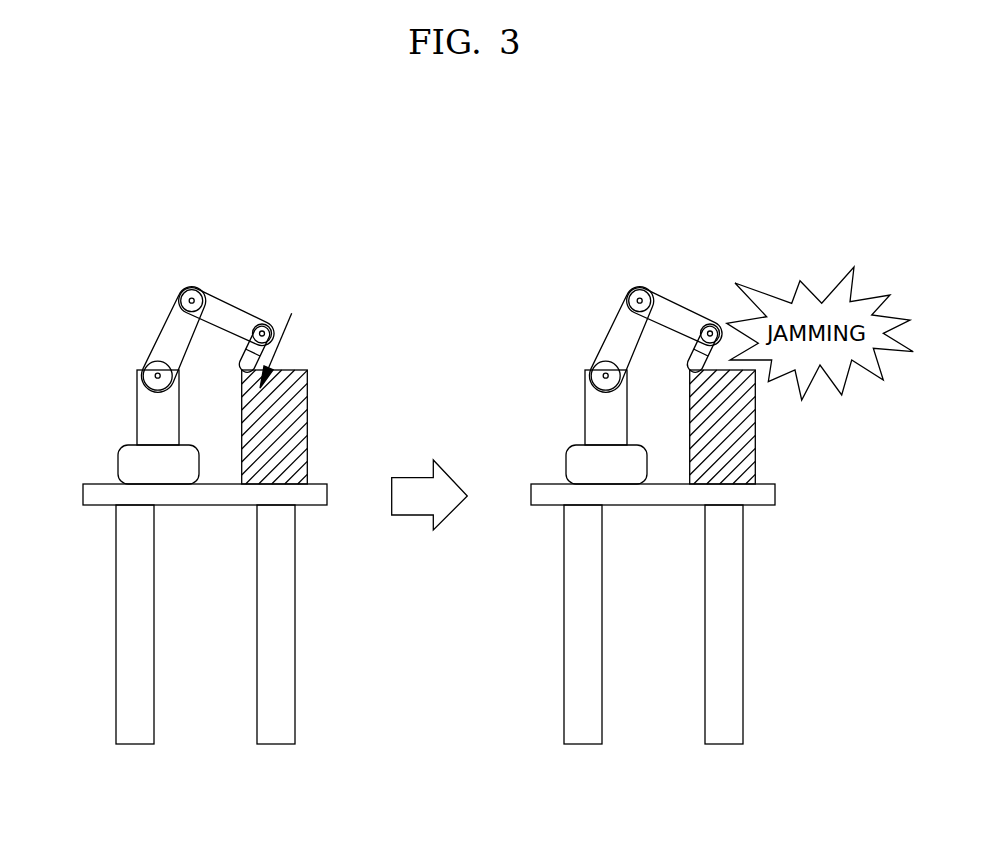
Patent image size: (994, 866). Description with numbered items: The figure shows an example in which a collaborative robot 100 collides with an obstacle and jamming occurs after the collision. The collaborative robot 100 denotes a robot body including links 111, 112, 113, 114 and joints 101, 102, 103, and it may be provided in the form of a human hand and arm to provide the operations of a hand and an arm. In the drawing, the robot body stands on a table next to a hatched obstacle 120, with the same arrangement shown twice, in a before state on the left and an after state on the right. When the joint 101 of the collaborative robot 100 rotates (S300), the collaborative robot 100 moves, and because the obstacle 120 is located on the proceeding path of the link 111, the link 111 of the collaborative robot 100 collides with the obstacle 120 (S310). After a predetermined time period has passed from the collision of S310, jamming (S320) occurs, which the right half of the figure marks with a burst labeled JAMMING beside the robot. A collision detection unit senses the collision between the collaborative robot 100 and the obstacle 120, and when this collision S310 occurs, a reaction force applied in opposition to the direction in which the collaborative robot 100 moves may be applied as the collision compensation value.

The collaborative robot 100 is at (108, 256).
The joint 101 is at (268, 325).
The joint 102 is at (178, 297).
The joint 103 is at (143, 375).
The link 111 is at (243, 343).
The link 112 is at (232, 301).
The link 113 is at (167, 345).
The link 114 is at (145, 412).
The obstacle 120 is at (299, 425).
The rotation of the joint S300 is at (282, 338).
The collision S310 is at (242, 366).
The jamming S320 is at (690, 366).